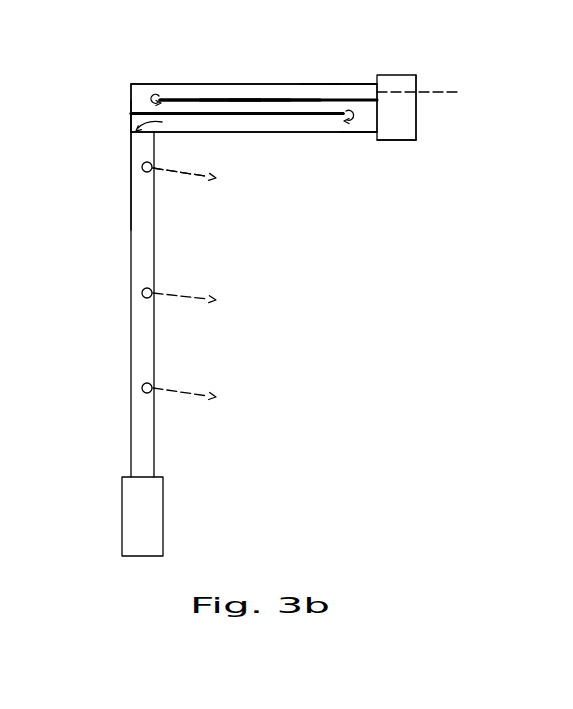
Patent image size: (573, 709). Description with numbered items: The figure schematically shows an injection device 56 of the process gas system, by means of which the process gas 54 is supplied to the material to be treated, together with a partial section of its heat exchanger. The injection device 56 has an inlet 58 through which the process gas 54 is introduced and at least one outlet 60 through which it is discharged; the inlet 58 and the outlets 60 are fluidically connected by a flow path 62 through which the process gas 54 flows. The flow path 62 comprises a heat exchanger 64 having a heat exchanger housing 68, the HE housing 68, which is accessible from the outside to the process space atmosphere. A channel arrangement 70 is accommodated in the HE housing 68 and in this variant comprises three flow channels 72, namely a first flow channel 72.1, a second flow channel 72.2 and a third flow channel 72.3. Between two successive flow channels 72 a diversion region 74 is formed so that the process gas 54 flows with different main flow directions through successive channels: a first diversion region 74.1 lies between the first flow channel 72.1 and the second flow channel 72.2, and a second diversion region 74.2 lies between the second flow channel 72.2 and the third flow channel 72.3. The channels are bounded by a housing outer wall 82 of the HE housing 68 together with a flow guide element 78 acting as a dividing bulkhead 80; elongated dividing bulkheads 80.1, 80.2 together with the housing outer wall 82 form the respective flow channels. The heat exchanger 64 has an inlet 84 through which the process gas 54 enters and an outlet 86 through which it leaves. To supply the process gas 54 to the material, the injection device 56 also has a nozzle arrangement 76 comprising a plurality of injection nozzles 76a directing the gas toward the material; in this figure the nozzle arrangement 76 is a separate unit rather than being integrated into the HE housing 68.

The process gas 54 is at (455, 91).
The injection device 56 is at (112, 69).
The inlet 58 is at (378, 82).
The outlet 60 is at (150, 175).
The flow path 62 is at (318, 72).
The heat exchanger 64 is at (368, 131).
The heat exchanger housing 68 is at (165, 84).
The channel arrangement 70 is at (343, 86).
The flow channel 72 is at (180, 90).
The first flow channel 72.1 is at (198, 90).
The second flow channel 72.2 is at (327, 120).
The third flow channel 72.3 is at (257, 125).
The diversion region 74 is at (138, 95).
The first diversion region 74.1 is at (138, 105).
The second diversion region 74.2 is at (380, 140).
The nozzle arrangement 76 is at (124, 228).
The injection nozzle 76a is at (143, 168).
The flow guide element 78 is at (235, 96).
The dividing bulkhead 80 is at (286, 96).
The first dividing bulkhead 80.1 is at (255, 96).
The second dividing bulkhead 80.2 is at (292, 116).
The housing outer wall 82 is at (362, 133).
The heat exchanger inlet 84 is at (416, 80).
The heat exchanger outlet 86 is at (131, 152).